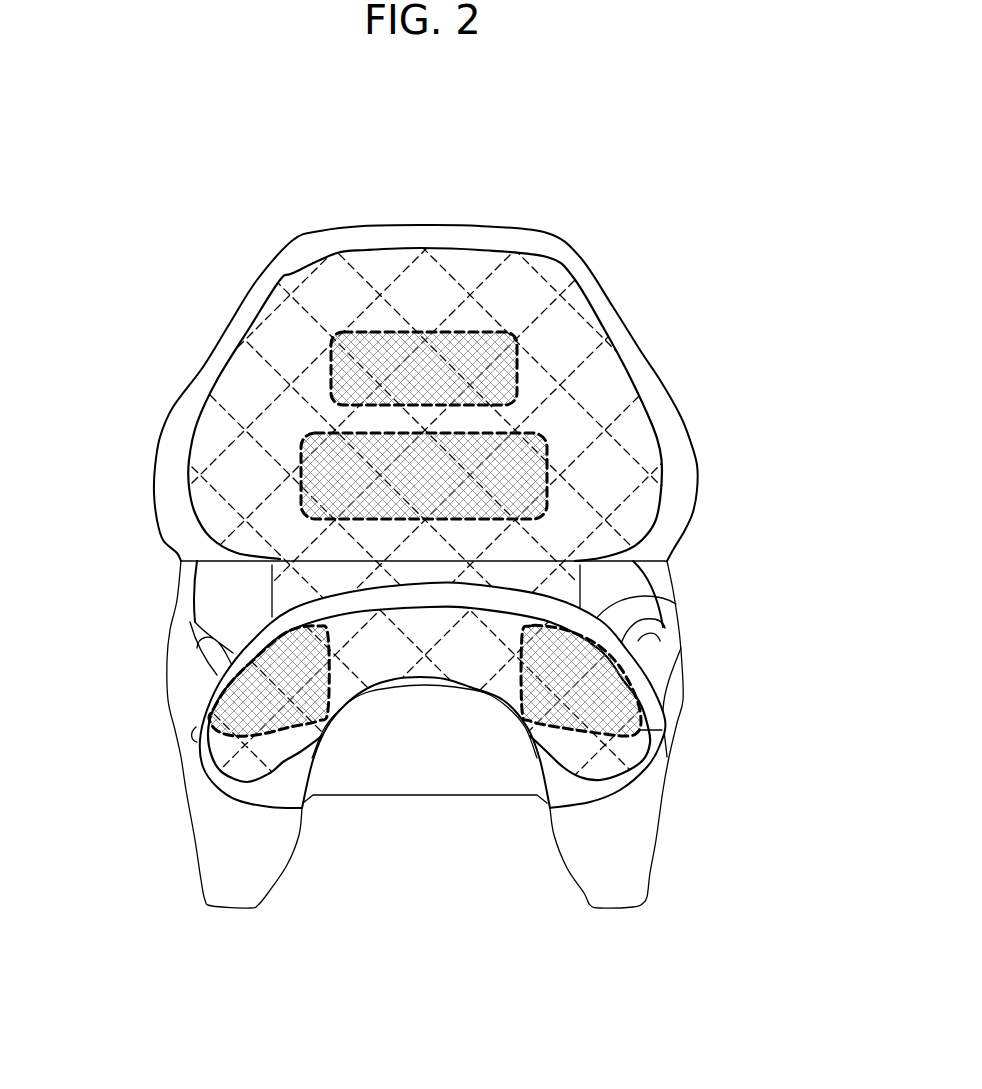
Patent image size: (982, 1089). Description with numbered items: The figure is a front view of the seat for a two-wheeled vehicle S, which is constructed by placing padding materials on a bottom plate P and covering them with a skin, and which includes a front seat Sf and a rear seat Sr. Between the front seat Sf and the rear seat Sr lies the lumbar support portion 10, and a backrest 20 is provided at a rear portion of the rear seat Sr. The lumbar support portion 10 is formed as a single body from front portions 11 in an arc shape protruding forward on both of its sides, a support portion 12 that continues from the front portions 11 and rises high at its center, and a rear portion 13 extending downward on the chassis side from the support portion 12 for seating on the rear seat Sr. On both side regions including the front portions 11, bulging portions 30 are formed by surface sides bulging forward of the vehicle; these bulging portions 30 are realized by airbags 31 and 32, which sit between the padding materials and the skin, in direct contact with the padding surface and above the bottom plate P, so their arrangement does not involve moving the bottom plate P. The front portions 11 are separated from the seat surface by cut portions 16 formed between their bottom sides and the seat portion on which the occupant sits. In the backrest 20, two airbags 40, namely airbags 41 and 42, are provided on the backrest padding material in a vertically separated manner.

The seat for a two-wheeled vehicle S is at (204, 155).
The lumbar support portion 10 is at (785, 588).
The front portions 11 is at (643, 683).
The support portion 12 is at (633, 595).
The rear portion 13 is at (660, 630).
The cut portions 16 is at (193, 733).
The backrest 20 is at (596, 245).
The bulging portions 30 is at (441, 704).
The airbag 31 is at (617, 706).
The airbag 32 is at (237, 697).
The airbags 40 is at (768, 314).
The airbag 41 is at (537, 433).
The airbag 42 is at (513, 347).
The rear seat Sr is at (206, 618).
The front seat Sf is at (244, 762).
The bottom plate P is at (423, 760).